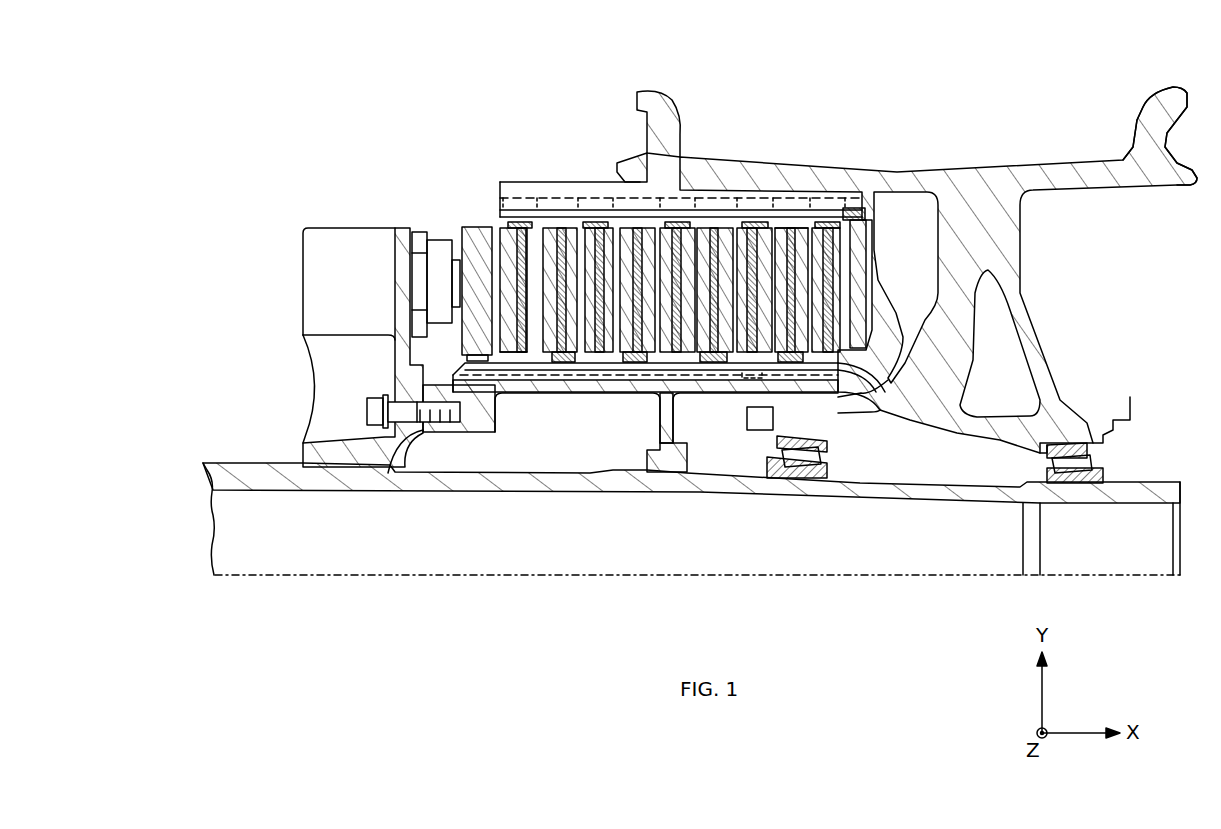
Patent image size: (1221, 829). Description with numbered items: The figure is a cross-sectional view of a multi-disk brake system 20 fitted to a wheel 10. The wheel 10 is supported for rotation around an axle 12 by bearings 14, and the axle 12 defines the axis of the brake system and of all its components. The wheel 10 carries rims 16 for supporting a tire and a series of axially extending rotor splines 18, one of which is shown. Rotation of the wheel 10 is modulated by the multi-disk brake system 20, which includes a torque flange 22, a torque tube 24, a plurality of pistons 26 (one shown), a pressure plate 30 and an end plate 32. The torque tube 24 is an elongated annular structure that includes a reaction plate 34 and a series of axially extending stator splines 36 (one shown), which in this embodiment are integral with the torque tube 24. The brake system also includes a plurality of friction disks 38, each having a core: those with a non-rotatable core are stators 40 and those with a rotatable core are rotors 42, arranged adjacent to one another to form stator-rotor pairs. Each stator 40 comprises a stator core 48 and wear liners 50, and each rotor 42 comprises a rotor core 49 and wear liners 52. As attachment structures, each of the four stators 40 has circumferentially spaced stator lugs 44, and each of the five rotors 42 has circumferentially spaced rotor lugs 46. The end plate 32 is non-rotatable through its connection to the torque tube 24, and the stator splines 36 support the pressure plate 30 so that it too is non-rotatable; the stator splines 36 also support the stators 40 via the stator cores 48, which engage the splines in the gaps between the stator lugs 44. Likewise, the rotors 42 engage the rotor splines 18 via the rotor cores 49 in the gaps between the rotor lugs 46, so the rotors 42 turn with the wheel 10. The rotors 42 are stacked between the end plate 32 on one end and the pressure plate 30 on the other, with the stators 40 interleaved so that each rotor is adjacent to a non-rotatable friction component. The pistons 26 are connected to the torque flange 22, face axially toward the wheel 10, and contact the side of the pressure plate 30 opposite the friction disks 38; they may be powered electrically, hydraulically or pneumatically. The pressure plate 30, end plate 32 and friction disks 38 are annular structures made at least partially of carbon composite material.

The wheel 10 is at (938, 265).
The axle 12 is at (945, 486).
The bearings 14 is at (832, 458).
The rims 16 is at (678, 100).
The rotor splines 18 is at (632, 186).
The multi-disk brake system 20 is at (385, 122).
The torque flange 22 is at (392, 376).
The torque tube 24 is at (553, 393).
The pistons 26 is at (440, 245).
The pressure plate 30 is at (468, 225).
The end plate 32 is at (868, 200).
The reaction plate 34 is at (895, 330).
The stator splines 36 is at (606, 380).
The friction disks 38 is at (492, 210).
The stator 40 is at (566, 380).
The rotor 42 is at (517, 208).
The stator lugs 44 is at (760, 372).
The rotor lugs 46 is at (736, 197).
The stator core 48 is at (792, 258).
The rotor core 49 is at (828, 295).
The wear liners 50 is at (793, 225).
The wear liners 52 is at (812, 222).